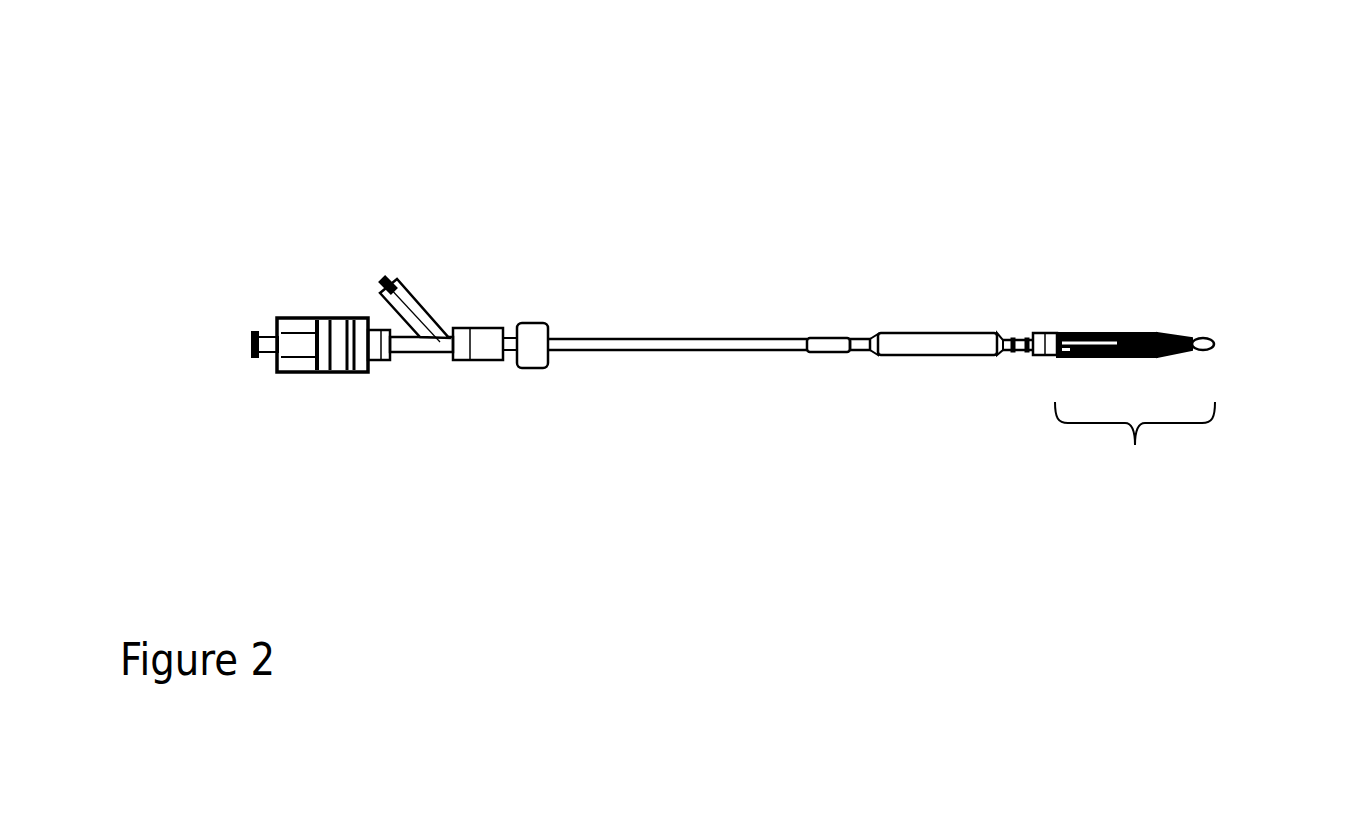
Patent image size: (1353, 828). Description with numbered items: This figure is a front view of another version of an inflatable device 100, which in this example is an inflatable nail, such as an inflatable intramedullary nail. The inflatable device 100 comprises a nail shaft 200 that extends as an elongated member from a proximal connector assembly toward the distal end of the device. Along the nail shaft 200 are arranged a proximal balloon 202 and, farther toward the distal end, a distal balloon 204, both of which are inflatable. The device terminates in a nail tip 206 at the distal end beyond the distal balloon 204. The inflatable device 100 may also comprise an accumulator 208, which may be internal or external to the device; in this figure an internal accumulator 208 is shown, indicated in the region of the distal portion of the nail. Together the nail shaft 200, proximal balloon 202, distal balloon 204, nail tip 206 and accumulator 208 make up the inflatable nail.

The inflatable device 100 is at (745, 135).
The nail shaft 200 is at (832, 345).
The proximal balloon 202 is at (937, 328).
The distal balloon 204 is at (1083, 328).
The nail tip 206 is at (1218, 340).
The accumulator 208 is at (1135, 447).